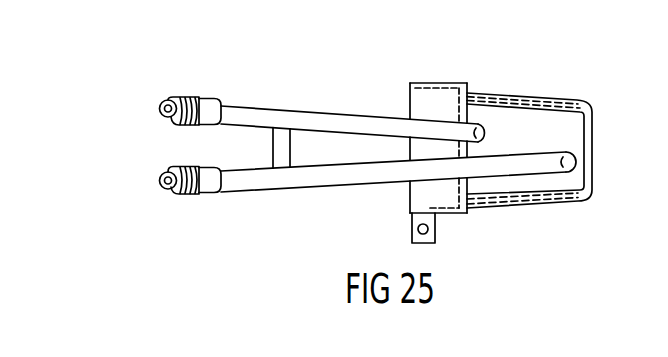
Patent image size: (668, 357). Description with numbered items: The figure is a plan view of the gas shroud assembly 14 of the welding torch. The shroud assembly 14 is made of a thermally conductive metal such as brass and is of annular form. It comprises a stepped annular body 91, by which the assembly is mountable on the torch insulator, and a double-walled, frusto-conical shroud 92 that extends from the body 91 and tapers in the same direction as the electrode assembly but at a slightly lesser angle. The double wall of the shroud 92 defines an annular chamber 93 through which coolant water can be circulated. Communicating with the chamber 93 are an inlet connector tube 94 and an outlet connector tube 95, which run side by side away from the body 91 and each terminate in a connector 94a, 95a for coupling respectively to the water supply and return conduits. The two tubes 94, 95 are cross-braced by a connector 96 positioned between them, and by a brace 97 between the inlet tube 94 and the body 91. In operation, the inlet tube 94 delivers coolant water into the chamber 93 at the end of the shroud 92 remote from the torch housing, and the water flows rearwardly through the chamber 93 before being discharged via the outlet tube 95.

The shroud assembly 14 is at (488, 78).
The stepped annular body 91 is at (438, 83).
The double-walled frusto-conical shroud 92 is at (530, 98).
The annular chamber 93 is at (555, 108).
The inlet connector tube 94 is at (248, 184).
The connector 94a is at (176, 193).
The outlet connector tube 95 is at (305, 122).
The connector 95a is at (174, 97).
The connector 96 is at (277, 146).
The brace 97 is at (432, 198).